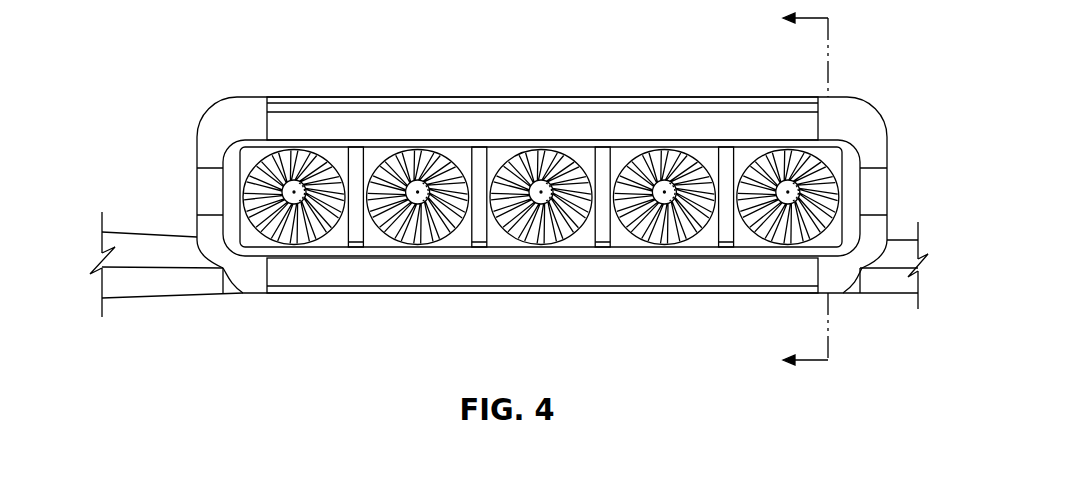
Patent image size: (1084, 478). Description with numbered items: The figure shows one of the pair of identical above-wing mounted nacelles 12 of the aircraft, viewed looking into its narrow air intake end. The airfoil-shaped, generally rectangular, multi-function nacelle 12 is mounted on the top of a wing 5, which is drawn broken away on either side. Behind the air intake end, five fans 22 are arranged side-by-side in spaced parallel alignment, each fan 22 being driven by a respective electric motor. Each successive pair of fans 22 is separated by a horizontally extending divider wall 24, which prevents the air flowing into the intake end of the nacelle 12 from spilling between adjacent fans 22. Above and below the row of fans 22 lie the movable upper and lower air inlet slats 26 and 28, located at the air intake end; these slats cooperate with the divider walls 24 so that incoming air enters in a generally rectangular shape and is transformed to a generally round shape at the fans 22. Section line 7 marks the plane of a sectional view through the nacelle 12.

The wing 5 is at (180, 285).
The nacelle 12 is at (276, 88).
The fan 22 is at (302, 236).
The divider wall 24 is at (357, 155).
The upper air inlet slat 26 is at (419, 128).
The lower air inlet slat 28 is at (377, 267).
The section line 7- 7 is at (793, 188).